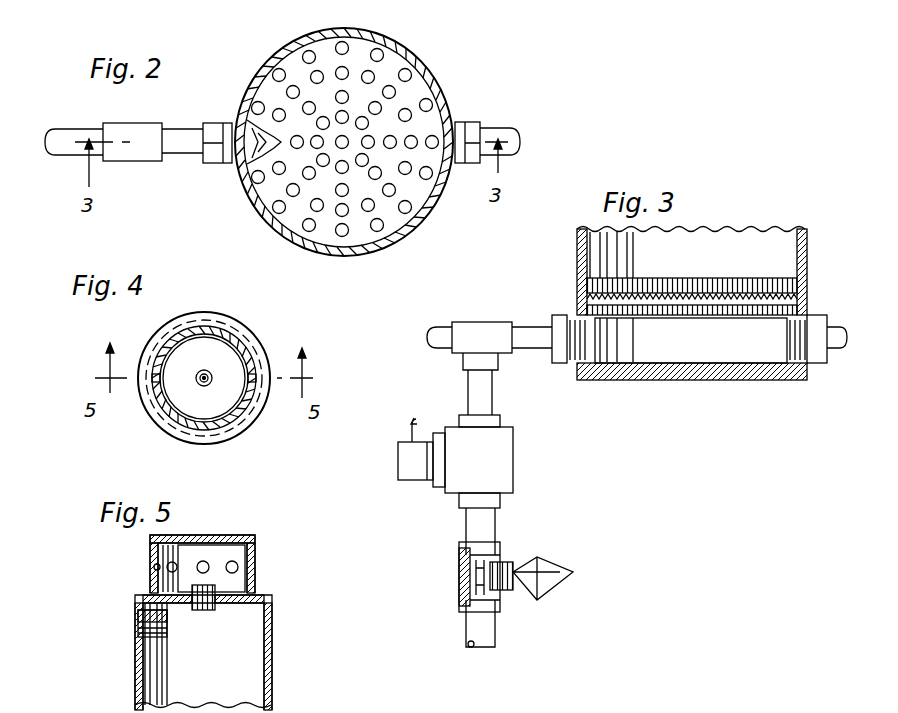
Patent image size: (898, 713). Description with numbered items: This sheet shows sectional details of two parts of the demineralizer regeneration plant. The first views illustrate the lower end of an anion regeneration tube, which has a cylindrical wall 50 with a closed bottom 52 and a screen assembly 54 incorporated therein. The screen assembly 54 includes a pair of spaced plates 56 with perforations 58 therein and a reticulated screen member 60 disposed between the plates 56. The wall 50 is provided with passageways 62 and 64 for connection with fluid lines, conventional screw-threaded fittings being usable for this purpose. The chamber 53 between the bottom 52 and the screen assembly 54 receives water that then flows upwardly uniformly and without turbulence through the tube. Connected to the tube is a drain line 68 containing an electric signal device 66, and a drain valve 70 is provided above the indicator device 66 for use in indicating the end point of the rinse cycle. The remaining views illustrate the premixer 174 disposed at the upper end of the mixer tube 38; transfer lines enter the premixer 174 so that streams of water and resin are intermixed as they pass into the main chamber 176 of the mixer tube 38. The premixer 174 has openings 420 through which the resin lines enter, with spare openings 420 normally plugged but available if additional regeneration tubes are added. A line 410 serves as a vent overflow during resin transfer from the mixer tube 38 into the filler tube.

In FIG. 2, the cylindrical wall 50 is at (408, 54).
In FIG. 2, the spaced plates 56 is at (363, 55).
In FIG. 3, the spaced plates 56 is at (610, 280).
In FIG. 2, the perforations 58 is at (428, 103).
In FIG. 3, the perforations 58 is at (660, 278).
In FIG. 3, the closed bottom 52 is at (745, 367).
In FIG. 3, the chamber 53 is at (693, 347).
In FIG. 3, the screen assembly 54 is at (737, 260).
In FIG. 3, the reticulated screen member 60 is at (688, 297).
In FIG. 3, the passageway 62 is at (808, 317).
In FIG. 3, the passageway 64 is at (573, 318).
In FIG. 3, the electric signal device 66 is at (553, 572).
In FIG. 3, the drain line 68 is at (482, 633).
In FIG. 3, the drain valve 70 is at (502, 458).
In FIG. 4, the mixer tube 38 is at (260, 335).
In FIG. 5, the mixer tube 38 is at (273, 640).
In FIG. 4, the premixer 174 is at (223, 335).
In FIG. 5, the premixer 174 is at (228, 530).
In FIG. 4, the openings 420 is at (155, 376).
In FIG. 5, the openings 420 is at (152, 563).
In FIG. 5, the line 410 is at (138, 622).
In FIG. 5, the main chamber 176 is at (258, 695).